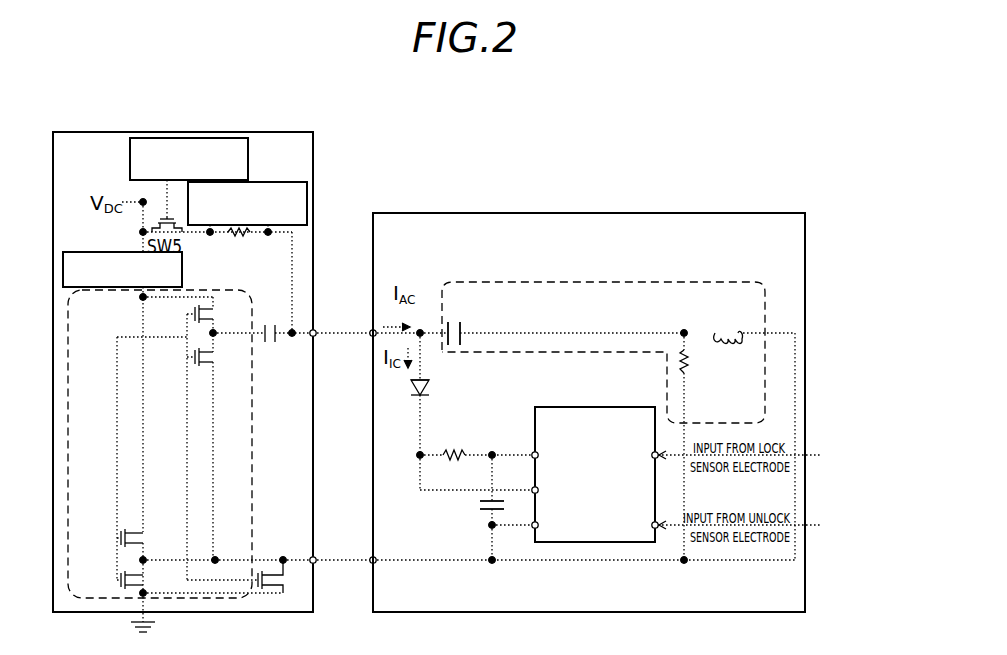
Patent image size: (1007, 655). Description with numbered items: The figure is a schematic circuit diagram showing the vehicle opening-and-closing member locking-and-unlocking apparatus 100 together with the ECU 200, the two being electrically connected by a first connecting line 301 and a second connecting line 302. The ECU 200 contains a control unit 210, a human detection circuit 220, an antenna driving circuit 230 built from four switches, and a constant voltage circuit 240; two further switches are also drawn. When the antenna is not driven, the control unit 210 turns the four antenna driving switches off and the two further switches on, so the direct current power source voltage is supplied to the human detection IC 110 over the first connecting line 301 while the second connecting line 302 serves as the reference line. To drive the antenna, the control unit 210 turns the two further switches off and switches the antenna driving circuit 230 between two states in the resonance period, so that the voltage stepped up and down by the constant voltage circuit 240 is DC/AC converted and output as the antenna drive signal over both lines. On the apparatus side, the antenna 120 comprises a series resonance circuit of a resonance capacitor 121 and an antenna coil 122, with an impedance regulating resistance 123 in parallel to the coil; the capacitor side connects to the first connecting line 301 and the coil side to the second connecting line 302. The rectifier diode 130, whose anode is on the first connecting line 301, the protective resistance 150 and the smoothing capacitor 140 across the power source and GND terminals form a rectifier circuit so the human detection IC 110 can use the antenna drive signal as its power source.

The vehicle opening-and-closing member locking-and-unlocking apparatus 100 is at (589, 389).
The human detection IC 110 is at (595, 457).
The antenna 120 is at (607, 399).
The resonance capacitor 121 is at (552, 317).
The antenna coil 122 is at (741, 422).
The impedance regulating resistance 123 is at (718, 446).
The rectifier diode 130 is at (404, 394).
The smoothing capacitor 140 is at (462, 507).
The protective resistance 150 is at (477, 436).
The ECU 200 is at (183, 347).
The control unit 210 is at (157, 177).
The human detection circuit 220 is at (247, 185).
The antenna driving circuit 230 is at (190, 461).
The constant voltage circuit 240 is at (122, 252).
The first connecting line 301 is at (365, 310).
The second connecting line 302 is at (552, 539).